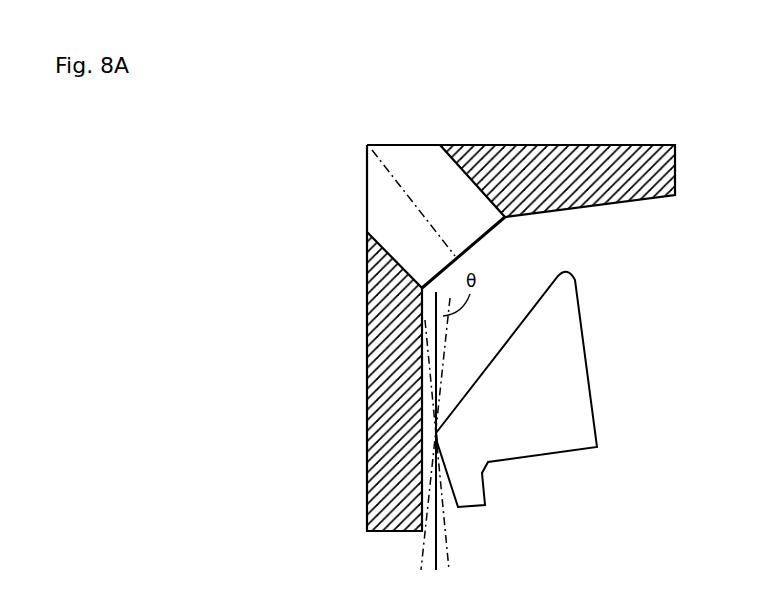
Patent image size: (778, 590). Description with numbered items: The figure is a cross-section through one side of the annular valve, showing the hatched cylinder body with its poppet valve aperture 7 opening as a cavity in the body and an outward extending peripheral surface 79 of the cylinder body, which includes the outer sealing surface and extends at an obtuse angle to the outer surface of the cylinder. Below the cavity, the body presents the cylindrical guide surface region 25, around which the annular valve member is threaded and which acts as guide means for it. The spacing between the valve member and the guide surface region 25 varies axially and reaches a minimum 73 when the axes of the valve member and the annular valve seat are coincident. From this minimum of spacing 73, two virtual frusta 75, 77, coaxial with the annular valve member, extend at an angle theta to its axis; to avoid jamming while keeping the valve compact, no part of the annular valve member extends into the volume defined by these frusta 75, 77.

The poppet valve aperture 7 is at (377, 163).
The cylindrical guide surface region 25 is at (420, 400).
The minimum of spacing 73 is at (436, 432).
The virtual frustum 75 is at (450, 548).
The virtual frustum 77 is at (453, 328).
The outward extending peripheral surface 79 is at (530, 215).